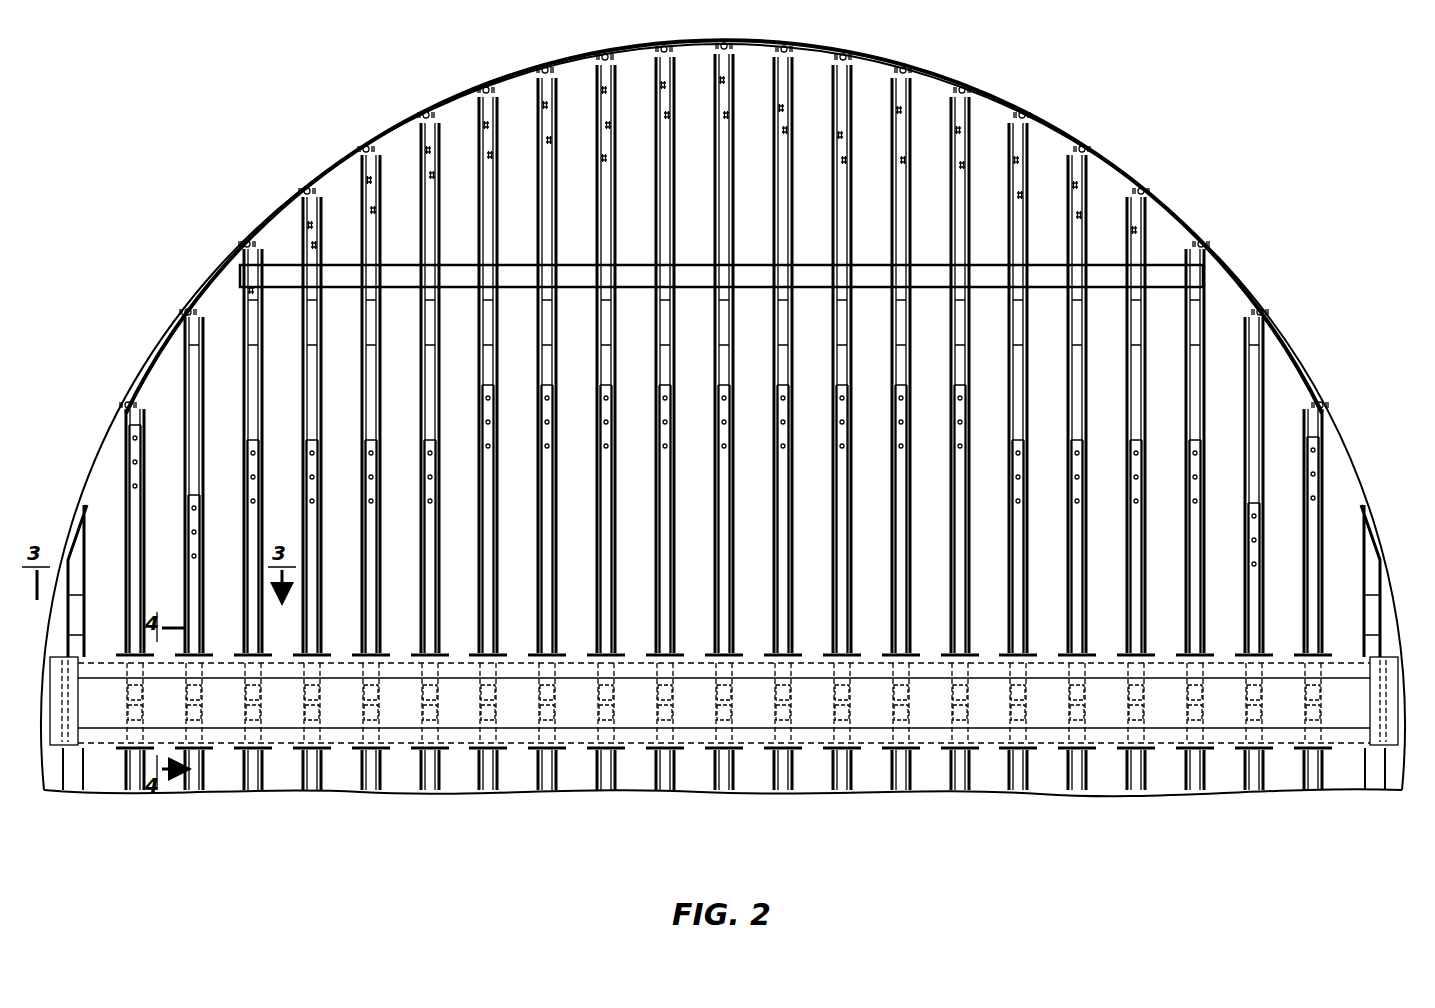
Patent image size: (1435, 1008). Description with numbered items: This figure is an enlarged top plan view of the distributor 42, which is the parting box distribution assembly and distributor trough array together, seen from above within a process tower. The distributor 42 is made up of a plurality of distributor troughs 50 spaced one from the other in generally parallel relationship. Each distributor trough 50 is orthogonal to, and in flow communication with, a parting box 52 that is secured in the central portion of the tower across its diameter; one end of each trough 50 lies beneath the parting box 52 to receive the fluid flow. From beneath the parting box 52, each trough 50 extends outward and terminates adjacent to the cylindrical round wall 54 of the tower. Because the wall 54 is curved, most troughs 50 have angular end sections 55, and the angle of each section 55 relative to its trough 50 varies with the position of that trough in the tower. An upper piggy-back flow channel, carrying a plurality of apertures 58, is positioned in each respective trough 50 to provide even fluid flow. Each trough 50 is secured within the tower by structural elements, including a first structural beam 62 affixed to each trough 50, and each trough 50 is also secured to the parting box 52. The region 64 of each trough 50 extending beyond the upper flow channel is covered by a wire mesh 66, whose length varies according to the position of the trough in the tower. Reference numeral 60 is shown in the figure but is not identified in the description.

The distributor 42 is at (205, 196).
The distributor trough 50 is at (440, 108).
The parting box 52 is at (222, 740).
The cylindrical round wall 54 is at (192, 293).
The angular end section 55 is at (252, 233).
The apertures 58 is at (360, 483).
The stud connector 60 is at (300, 461).
The first structural beam 62 is at (1103, 268).
The region 64 is at (970, 186).
The wire mesh 66 is at (952, 160).